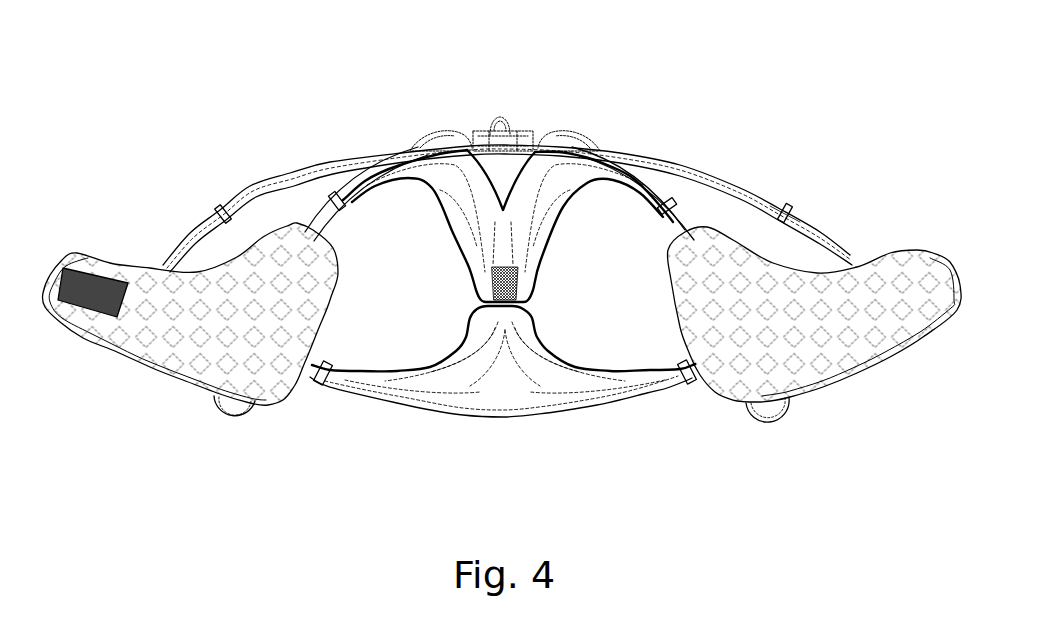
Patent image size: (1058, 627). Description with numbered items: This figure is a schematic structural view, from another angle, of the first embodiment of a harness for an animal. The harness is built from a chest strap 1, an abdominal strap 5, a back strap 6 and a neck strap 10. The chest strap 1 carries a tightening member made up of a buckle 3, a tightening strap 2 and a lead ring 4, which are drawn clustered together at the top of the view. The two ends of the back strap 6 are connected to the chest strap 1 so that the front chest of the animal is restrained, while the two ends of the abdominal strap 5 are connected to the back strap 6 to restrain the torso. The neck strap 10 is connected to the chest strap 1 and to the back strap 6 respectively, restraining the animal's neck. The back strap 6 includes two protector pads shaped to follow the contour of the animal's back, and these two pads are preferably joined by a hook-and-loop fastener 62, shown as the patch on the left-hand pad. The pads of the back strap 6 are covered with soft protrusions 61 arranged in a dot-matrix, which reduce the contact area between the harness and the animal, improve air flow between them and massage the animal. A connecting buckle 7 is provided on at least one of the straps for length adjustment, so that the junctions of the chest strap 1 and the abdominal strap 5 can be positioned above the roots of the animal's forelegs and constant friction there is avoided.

The chest strap 1 is at (623, 167).
The tightening strap 2 is at (587, 130).
The buckle 3 is at (520, 130).
The lead ring 4 is at (490, 117).
The abdominal strap 5 is at (367, 387).
The back strap 6 is at (140, 265).
The soft protrusions 61 is at (783, 357).
The hook-and-loop fastener 62 is at (107, 316).
The connecting buckle 7 is at (790, 205).
The neck strap 10 is at (282, 183).